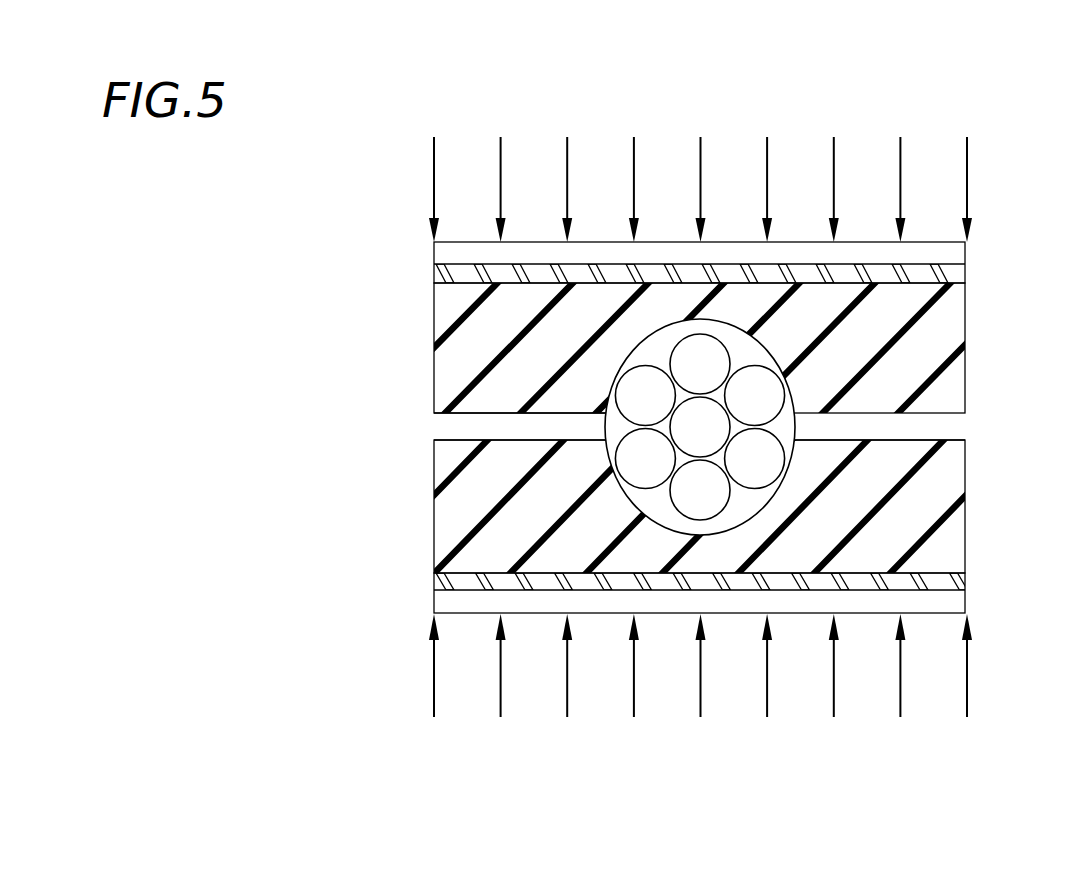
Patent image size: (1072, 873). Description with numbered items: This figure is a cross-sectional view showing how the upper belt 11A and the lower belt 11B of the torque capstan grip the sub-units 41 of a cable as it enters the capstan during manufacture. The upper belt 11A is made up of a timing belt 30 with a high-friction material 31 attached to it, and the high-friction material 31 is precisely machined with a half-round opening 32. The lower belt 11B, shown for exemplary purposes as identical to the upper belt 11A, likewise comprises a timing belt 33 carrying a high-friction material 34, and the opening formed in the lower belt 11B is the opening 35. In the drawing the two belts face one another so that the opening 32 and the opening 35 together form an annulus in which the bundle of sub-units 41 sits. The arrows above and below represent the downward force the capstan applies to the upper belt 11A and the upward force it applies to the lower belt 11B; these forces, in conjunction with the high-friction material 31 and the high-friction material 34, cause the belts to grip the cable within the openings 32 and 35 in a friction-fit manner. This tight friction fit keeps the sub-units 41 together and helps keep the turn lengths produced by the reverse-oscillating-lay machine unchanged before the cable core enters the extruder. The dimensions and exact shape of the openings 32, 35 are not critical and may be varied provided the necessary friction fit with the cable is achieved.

The upper belt 11A is at (873, 115).
The lower belt 11B is at (886, 744).
The timing belt 30 is at (965, 275).
The high-friction material 31 is at (433, 312).
The opening 32 is at (793, 443).
The timing belt 33 is at (963, 582).
The high-friction material 34 is at (433, 485).
The opening 35 is at (607, 437).
The sub-units 41 is at (700, 427).